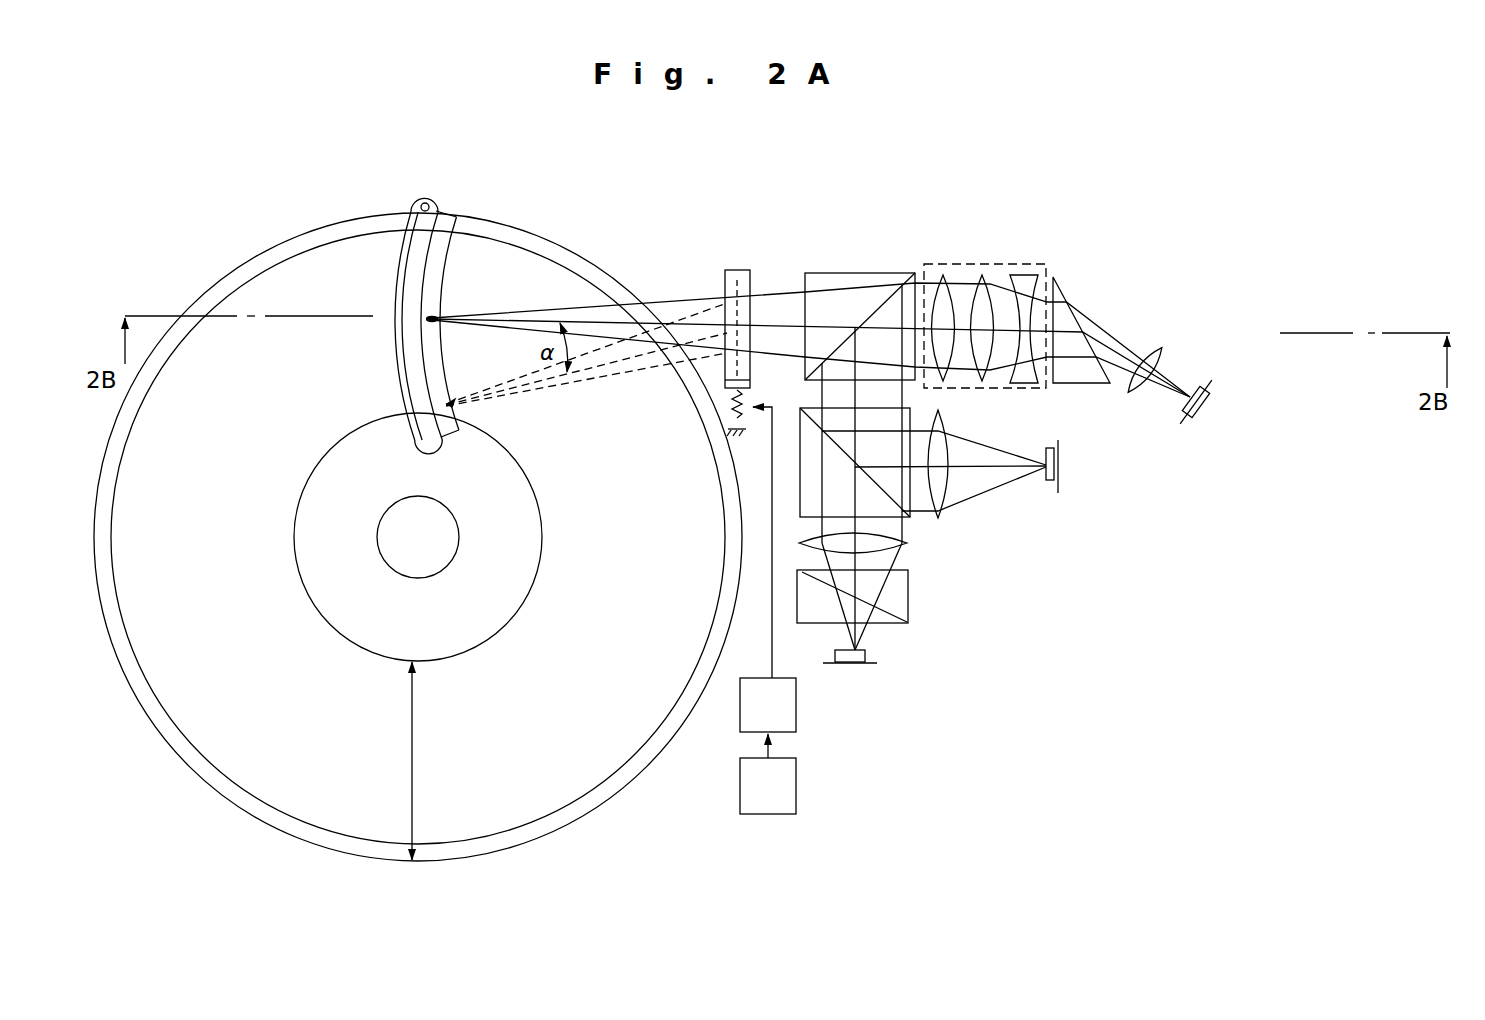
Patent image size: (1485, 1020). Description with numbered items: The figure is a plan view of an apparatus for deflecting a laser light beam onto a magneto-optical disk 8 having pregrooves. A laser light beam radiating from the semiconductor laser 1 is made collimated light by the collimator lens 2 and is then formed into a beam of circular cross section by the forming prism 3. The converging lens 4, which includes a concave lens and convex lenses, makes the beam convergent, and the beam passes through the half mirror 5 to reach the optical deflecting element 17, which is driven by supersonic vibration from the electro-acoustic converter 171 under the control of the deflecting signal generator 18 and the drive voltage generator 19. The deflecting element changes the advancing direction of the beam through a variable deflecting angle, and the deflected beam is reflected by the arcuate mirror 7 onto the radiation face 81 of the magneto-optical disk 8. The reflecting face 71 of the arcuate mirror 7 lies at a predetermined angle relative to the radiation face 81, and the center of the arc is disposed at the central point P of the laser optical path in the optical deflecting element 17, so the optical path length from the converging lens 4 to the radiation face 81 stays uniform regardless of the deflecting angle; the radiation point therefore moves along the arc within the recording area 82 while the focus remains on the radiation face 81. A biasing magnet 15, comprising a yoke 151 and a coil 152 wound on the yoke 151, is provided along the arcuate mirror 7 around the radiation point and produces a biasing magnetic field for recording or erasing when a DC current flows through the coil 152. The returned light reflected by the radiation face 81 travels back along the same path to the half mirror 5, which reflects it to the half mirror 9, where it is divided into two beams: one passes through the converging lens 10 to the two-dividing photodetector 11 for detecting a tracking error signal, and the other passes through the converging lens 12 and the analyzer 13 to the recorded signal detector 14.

The semiconductor laser 1 is at (1219, 400).
The collimator lens 2 is at (1161, 351).
The forming prism 3 is at (1078, 312).
The converging lens 4 is at (963, 273).
The half mirror 5 is at (841, 281).
The arcuate mirror 7 is at (453, 258).
The reflecting face 71 is at (436, 298).
The magneto-optical disk 8 is at (602, 273).
The radiation face 81 is at (542, 266).
The recording area 82 is at (427, 761).
The half mirror 9 is at (885, 414).
The converging lens 10 is at (941, 441).
The two-dividing photodetector 11 is at (1061, 461).
The converging lens 12 is at (883, 545).
The analyzer 13 is at (890, 593).
The recorded signal detector 14 is at (866, 657).
The biasing magnet 15 is at (395, 281).
The yoke 151 is at (406, 342).
The coil 152 is at (398, 303).
The optical deflecting element 17 is at (750, 276).
The electro-acoustic converter 171 is at (752, 388).
The deflecting signal generator 18 is at (798, 703).
The drive voltage generator 19 is at (798, 787).
The central point of the laser optical path P is at (748, 326).